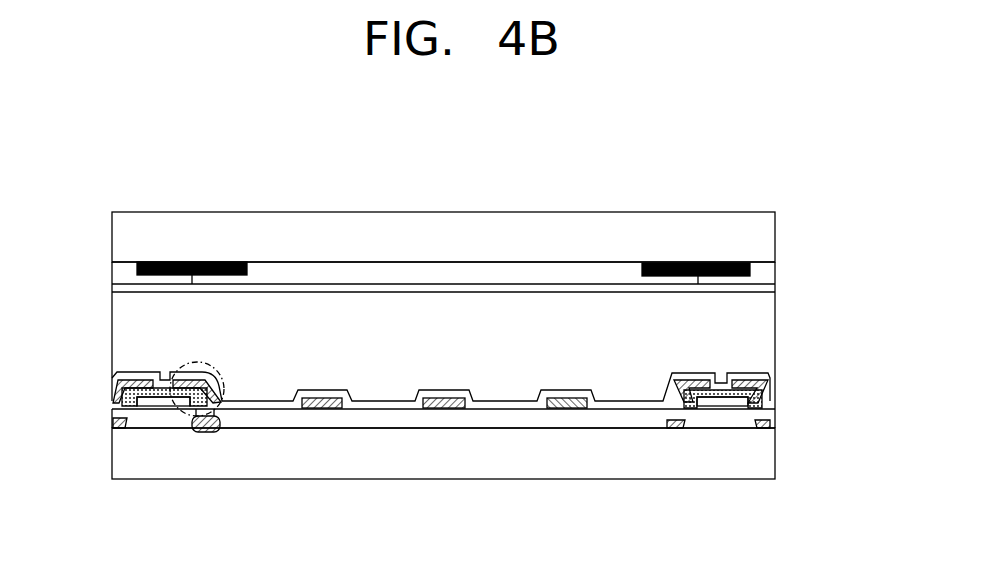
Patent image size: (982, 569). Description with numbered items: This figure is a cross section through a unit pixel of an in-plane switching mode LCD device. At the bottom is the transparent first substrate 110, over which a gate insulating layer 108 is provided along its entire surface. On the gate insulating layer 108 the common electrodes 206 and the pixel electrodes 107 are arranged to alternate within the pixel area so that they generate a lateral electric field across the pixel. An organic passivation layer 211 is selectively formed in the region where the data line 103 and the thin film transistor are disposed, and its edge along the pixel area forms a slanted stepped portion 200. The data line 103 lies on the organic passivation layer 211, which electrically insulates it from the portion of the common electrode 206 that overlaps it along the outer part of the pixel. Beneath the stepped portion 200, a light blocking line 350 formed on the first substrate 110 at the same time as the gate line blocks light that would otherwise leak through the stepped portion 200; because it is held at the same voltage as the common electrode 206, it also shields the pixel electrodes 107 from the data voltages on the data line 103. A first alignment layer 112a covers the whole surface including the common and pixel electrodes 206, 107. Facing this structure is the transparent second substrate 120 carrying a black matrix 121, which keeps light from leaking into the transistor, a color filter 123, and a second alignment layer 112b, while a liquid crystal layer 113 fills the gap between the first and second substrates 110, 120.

The transparent second substrate 120 is at (763, 241).
The color filter 123 is at (507, 273).
The black matrix 121 is at (662, 263).
The second alignment layer 112b is at (767, 296).
The liquid crystal layer 113 is at (763, 344).
The first alignment layer 112a is at (767, 382).
The organic passivation layer 211 is at (767, 400).
The gate insulating layer 108 is at (762, 416).
The transparent first substrate 110 is at (762, 462).
The stepped portion 200 is at (183, 374).
The data line 103 is at (157, 412).
The light blocking line 350 is at (215, 433).
The common electrode 206 is at (202, 432).
The pixel electrode 107 is at (313, 409).